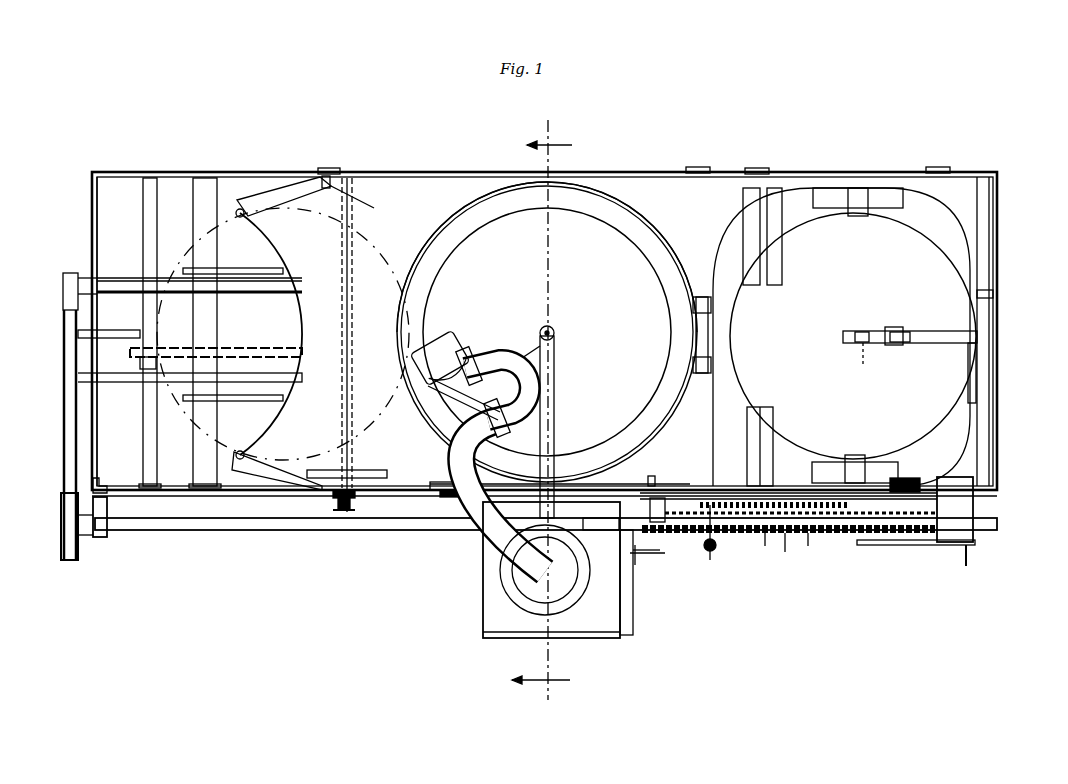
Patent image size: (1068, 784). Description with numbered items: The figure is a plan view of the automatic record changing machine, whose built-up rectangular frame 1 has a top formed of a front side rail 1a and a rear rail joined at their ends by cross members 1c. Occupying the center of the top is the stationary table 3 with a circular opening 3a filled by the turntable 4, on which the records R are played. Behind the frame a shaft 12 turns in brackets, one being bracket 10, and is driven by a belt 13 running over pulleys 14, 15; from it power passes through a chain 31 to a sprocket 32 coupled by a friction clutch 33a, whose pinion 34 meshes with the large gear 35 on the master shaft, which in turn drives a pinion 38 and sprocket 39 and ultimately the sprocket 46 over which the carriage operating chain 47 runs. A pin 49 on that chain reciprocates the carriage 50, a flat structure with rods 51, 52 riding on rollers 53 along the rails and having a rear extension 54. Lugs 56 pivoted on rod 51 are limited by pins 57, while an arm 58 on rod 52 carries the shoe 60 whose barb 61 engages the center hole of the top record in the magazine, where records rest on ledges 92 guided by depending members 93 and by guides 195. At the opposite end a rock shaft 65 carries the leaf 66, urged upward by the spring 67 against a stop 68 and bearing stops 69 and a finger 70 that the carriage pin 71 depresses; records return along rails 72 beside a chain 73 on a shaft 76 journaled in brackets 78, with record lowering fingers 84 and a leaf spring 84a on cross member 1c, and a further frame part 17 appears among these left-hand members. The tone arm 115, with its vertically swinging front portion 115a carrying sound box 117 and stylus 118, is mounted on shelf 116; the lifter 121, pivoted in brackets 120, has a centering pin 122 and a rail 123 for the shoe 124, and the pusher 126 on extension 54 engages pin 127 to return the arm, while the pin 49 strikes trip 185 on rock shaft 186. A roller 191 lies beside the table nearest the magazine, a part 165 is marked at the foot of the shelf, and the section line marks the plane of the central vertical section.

The frame 1 is at (232, 170).
The front side rail 1a is at (316, 175).
The cross members 1c is at (92, 237).
The stationary table 3 is at (437, 176).
The circular opening 3a is at (618, 192).
The turntable 4 is at (542, 414).
The bracket 10 is at (100, 537).
The shaft 12 is at (222, 531).
The belt 13 is at (64, 405).
The pulley 14 is at (62, 300).
The pulley 15 is at (60, 512).
The cross bar 17 is at (218, 309).
The chain 31 is at (686, 494).
The sprocket 32 is at (708, 550).
The friction clutch 33a is at (724, 552).
The pinion 34 is at (712, 503).
The gear 35 is at (840, 540).
The pinion 38 is at (764, 549).
The sprocket 39 is at (791, 558).
The sprocket 46 is at (672, 536).
The carriage operating chain 47 is at (819, 549).
The pin 49 is at (990, 554).
The carriage 50 is at (748, 176).
The rod 51 is at (697, 340).
The rod 52 is at (982, 360).
The rollers 53 is at (452, 498).
The rear extension 54 is at (974, 516).
The lugs 56 is at (696, 304).
The pins 57 is at (712, 362).
The arm 58 is at (940, 330).
The shoe 60 is at (888, 326).
The barb 61 is at (867, 364).
The rock shaft 65 is at (350, 210).
The leaf 66 is at (303, 333).
The spring 67 is at (358, 508).
The stop 68 is at (355, 200).
The stops 69 is at (248, 214).
The finger 70 is at (379, 470).
The pin 71 is at (654, 470).
The rails 72 is at (126, 256).
The chain 73 is at (265, 348).
The shaft 76 is at (192, 436).
The brackets 78 is at (268, 500).
The record lowering fingers 84 is at (240, 268).
The leaf spring 84a is at (95, 334).
The record supporting ledges 92 is at (840, 210).
The depending members 93 is at (862, 190).
The tone arm 115 is at (458, 458).
The front portion of tone arm 115a is at (548, 386).
The shelf 116 is at (486, 613).
The sound box 117 is at (430, 382).
The stylus 118 is at (432, 350).
The brackets 120 is at (582, 514).
The tone arm lifter 121 is at (556, 434).
The centering pin 122 is at (556, 328).
The rail 123 is at (510, 346).
The shoe 124 is at (470, 396).
The pusher 126 is at (888, 546).
The pin 127 is at (566, 540).
The housing bottom 165 is at (494, 640).
The trip 185 is at (666, 558).
The rock shaft 186 is at (634, 610).
The roller 191 is at (742, 392).
The guides 195 is at (992, 278).
The drum A is at (448, 246).
The records R is at (635, 256).